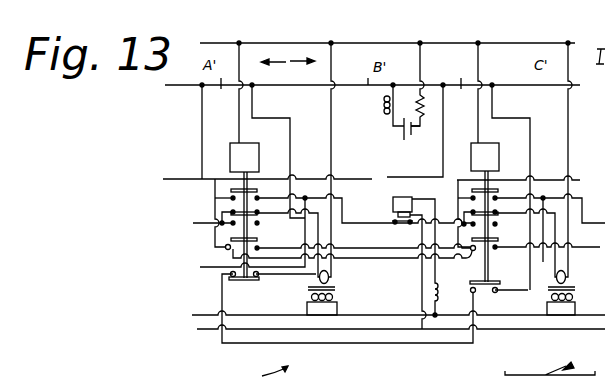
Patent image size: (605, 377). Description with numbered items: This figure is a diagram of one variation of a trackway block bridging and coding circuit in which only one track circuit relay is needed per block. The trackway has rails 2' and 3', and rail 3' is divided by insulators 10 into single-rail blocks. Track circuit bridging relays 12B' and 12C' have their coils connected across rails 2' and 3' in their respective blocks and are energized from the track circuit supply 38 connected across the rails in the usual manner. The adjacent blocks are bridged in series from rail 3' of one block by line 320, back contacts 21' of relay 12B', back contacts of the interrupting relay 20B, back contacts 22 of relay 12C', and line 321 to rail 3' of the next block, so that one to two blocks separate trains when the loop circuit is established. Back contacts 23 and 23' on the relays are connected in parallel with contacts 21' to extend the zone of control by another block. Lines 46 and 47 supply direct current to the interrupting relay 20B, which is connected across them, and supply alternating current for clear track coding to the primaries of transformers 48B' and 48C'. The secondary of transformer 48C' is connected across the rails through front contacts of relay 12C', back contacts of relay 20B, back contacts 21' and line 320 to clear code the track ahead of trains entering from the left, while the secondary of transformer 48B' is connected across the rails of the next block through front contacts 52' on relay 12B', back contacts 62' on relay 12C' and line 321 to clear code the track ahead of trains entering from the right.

The rail 2' is at (387, 36).
The rail 3' is at (372, 78).
The insulator 10 is at (217, 90).
The line 321 is at (259, 116).
The track circuit bridging relay 12B' is at (256, 203).
The track circuit bridging relay 12C' is at (496, 205).
The back contacts 21' is at (376, 192).
The back contacts 22 is at (258, 225).
The back contacts 23 is at (217, 257).
The back contacts 23' is at (459, 261).
The front contacts 52' is at (252, 288).
The back contacts 62' is at (495, 279).
The track circuit supply 38 is at (400, 127).
The line 320 is at (443, 165).
The interrupting relay 20B is at (398, 261).
The line 46 is at (408, 313).
The line 47 is at (405, 328).
The transformer 48B' is at (340, 301).
The transformer 48C' is at (576, 298).